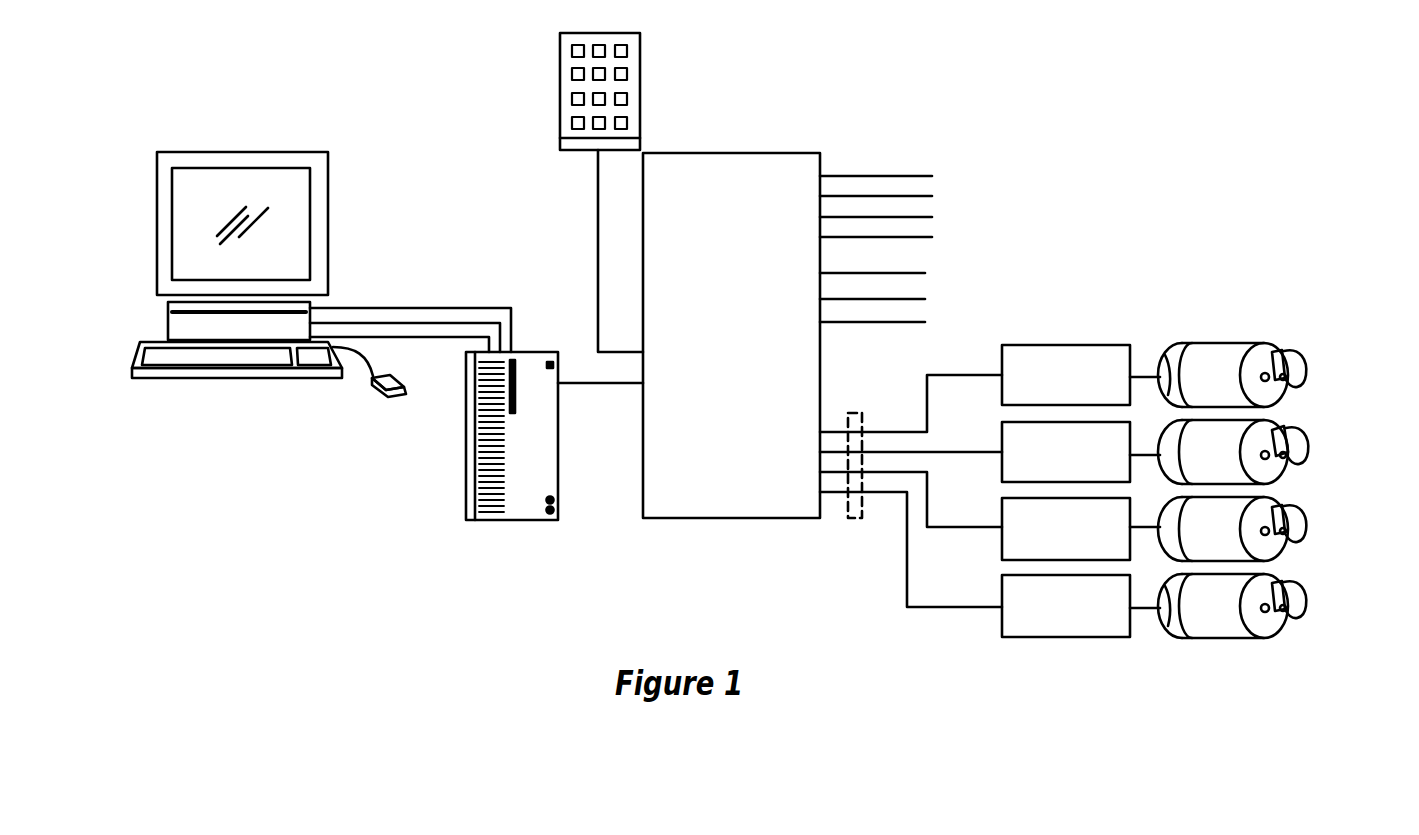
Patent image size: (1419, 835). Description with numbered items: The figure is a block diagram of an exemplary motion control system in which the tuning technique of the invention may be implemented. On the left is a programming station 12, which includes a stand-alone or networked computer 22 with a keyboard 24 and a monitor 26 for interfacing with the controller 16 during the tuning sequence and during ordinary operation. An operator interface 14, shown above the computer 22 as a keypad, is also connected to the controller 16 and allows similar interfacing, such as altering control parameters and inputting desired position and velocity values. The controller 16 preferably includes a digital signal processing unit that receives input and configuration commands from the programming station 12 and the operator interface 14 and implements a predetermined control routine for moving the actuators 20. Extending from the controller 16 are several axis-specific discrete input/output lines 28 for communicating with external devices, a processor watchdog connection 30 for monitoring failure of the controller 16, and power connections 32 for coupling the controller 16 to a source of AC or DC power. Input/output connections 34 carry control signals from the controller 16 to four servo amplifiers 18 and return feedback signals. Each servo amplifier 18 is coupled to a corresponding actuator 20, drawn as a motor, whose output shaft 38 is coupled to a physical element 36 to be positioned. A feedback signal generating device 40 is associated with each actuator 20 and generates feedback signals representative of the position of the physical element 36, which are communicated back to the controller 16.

The programming station 12 is at (404, 506).
The operator interface 14 is at (641, 61).
The controller 16 is at (773, 153).
The servo amplifiers 18 is at (1130, 362).
The actuators 20 is at (1218, 433).
The computer 22 is at (537, 350).
The keyboard 24 is at (140, 342).
The monitor 26 is at (330, 158).
The axis-specific discrete input/output lines 28 is at (937, 170).
The processor watchdog connection 30 is at (886, 274).
The power connections 32 is at (937, 293).
The input/output connections 34 is at (857, 522).
The physical element 36 is at (1297, 352).
The output shaft 38 is at (1270, 352).
The feedback signal generating device 40 is at (1183, 392).